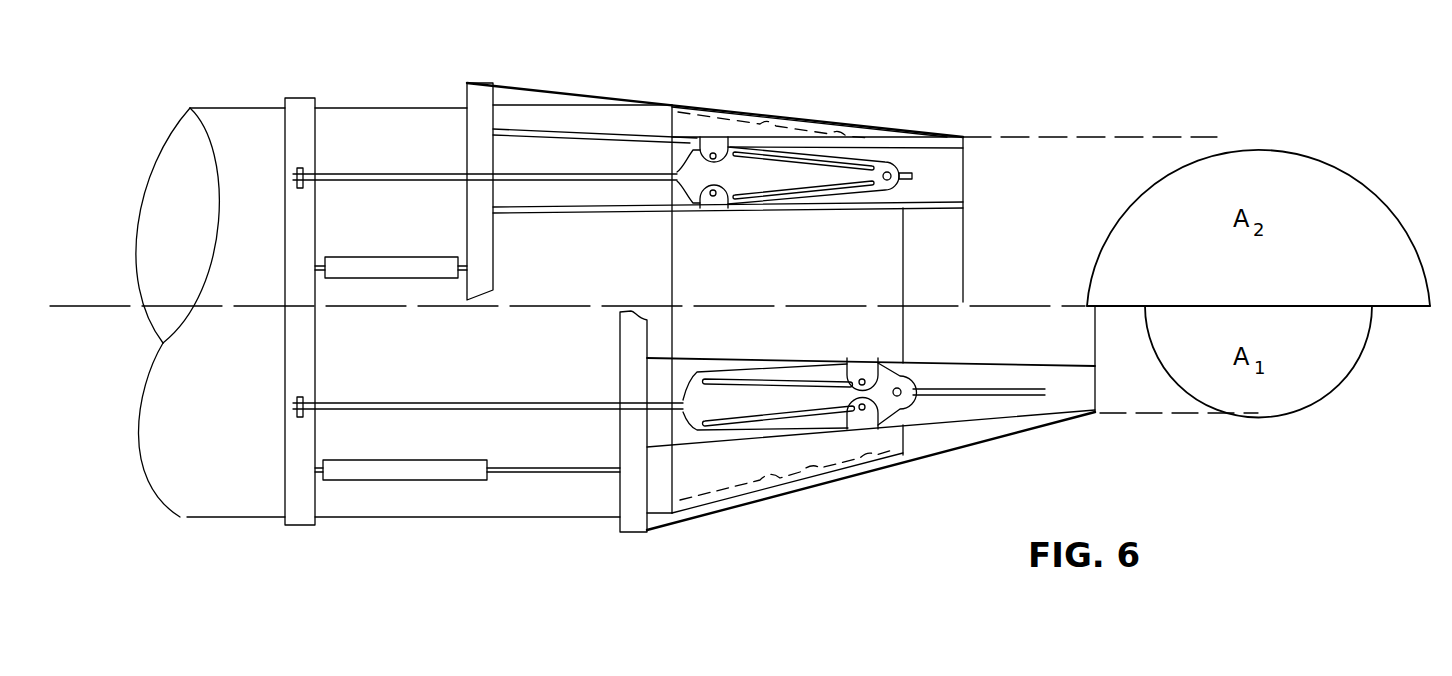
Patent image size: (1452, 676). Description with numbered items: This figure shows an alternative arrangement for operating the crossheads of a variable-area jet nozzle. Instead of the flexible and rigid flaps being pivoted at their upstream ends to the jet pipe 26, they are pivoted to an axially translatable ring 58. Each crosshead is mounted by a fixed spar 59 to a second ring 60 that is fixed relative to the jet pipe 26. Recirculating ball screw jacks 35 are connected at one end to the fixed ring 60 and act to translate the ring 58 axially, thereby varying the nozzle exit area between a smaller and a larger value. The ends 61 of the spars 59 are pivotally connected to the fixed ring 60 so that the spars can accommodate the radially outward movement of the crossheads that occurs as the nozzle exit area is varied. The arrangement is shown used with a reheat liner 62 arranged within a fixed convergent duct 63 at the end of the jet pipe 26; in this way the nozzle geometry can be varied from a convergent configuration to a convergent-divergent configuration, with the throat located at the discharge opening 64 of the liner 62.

The jet pipe 26 is at (243, 107).
The second ring 60 is at (297, 97).
The axially translatable ring 58 is at (473, 83).
The ends of the spars 61 is at (295, 175).
The fixed spar 59 is at (377, 173).
The recirculating ball screw jack 35 is at (397, 480).
The reheat liner 62 is at (883, 457).
The fixed convergent duct 63 is at (843, 470).
The discharge opening 64 is at (900, 438).